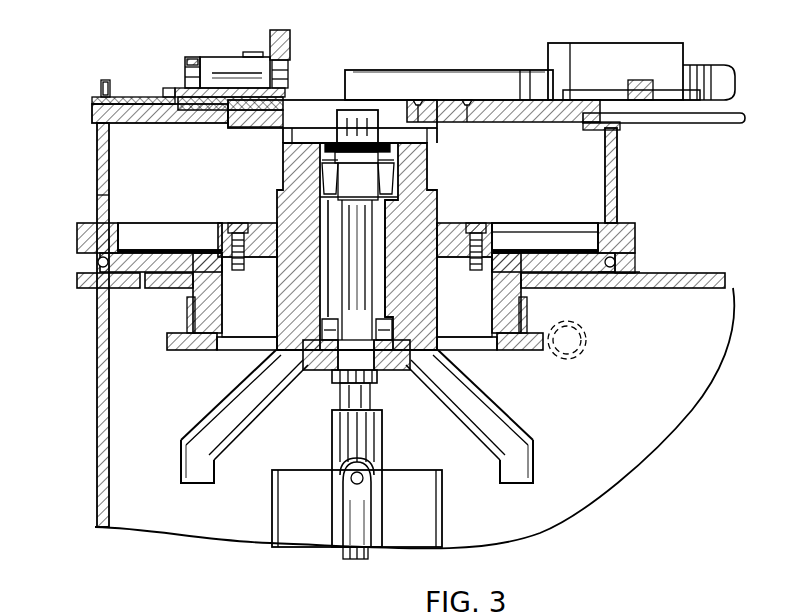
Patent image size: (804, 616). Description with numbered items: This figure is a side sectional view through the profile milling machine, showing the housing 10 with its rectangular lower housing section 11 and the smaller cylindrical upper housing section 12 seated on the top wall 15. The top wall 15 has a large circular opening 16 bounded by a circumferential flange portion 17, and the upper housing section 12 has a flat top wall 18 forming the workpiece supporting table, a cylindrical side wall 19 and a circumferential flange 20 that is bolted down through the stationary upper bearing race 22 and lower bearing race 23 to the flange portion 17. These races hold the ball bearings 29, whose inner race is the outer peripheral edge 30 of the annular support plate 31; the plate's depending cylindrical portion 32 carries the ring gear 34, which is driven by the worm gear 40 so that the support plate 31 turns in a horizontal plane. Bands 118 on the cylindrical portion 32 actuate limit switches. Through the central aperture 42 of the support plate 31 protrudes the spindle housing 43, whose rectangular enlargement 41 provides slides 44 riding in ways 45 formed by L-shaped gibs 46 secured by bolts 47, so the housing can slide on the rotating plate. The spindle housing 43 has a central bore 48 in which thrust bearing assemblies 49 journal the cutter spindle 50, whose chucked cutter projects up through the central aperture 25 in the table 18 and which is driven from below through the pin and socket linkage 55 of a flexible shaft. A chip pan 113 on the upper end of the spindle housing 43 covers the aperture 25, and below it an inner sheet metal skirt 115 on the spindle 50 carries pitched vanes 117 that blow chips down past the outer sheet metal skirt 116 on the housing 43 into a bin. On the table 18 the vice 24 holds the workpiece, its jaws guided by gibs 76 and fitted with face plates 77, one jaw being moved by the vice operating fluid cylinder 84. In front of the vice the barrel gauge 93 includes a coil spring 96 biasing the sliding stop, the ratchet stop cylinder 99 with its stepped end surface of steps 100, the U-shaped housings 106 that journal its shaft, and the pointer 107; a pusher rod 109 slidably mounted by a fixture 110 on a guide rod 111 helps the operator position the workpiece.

The housing 10 is at (70, 156).
The lower housing section 11 is at (97, 412).
The upper housing section 12 is at (97, 200).
The top wall 15 is at (719, 281).
The large circular opening 16 is at (160, 284).
The circumferential flange portion 17 is at (87, 284).
The flat top wall 18 is at (137, 104).
The cylindrical side wall 19 is at (97, 162).
The circumferential flange 20 is at (628, 238).
The upper bearing race 22 is at (630, 260).
The lower bearing race 23 is at (640, 268).
The vice 24 is at (395, 68).
The central aperture 25 is at (300, 118).
The ball bearings 29 is at (98, 264).
The outer peripheral edge 30 is at (96, 249).
The annular support plate 31 is at (153, 258).
The depending cylindrical portion 32 is at (211, 341).
The ring gear 34 is at (168, 345).
The worm gear 40 is at (588, 343).
The rectangular enlargement 41 is at (268, 236).
The central aperture 42 is at (445, 248).
The spindle housing 43 is at (420, 198).
The slides 44 is at (478, 228).
The ways 45 is at (238, 233).
The L-shaped gibs 46 is at (521, 234).
The bolts 47 is at (233, 226).
The central bore 48 is at (380, 295).
The thrust bearing assemblies 49 is at (396, 178).
The cutter spindle 50 is at (357, 118).
The pin and socket linkage 55 is at (360, 518).
The gibs 76 is at (346, 74).
The face plate 77 is at (448, 82).
The vice operating fluid cylinder 84 is at (679, 66).
The barrel gauge 93 is at (163, 62).
The coil spring 96 is at (211, 110).
The ratchet stop cylinder 99 is at (252, 53).
The steps 100 is at (221, 57).
The U-shaped housings 106 is at (192, 57).
The pointer 107 is at (291, 42).
The pusher rod 109 is at (592, 92).
The fixture 110 is at (637, 84).
The guide rod 111 is at (721, 122).
The chip pan 113 is at (293, 160).
The inner sheet metal skirt 115 is at (501, 486).
The outer sheet metal skirt 116 is at (206, 424).
The vanes 117 is at (258, 391).
The bands 118 is at (187, 322).